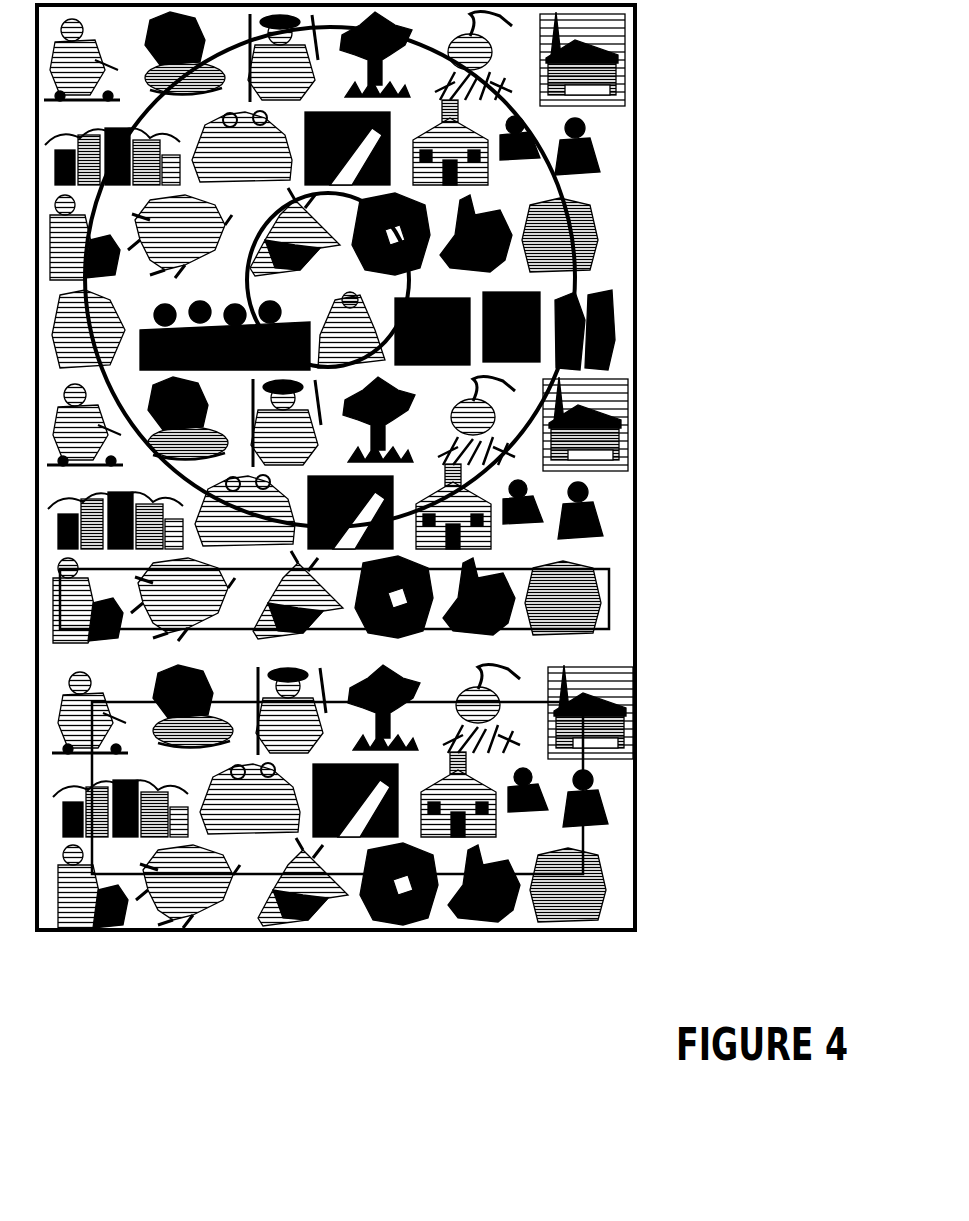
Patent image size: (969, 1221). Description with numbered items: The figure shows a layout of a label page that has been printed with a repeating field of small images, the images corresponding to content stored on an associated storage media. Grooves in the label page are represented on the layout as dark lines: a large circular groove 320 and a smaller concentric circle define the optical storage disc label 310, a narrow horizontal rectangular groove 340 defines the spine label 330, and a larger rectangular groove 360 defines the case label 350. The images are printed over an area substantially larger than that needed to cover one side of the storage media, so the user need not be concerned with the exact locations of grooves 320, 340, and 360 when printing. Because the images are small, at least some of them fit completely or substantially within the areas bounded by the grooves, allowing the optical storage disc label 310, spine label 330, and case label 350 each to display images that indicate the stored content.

The optical storage disc label 310 is at (543, 282).
The groove 320 is at (561, 187).
The spine label 330 is at (583, 565).
The groove 340 is at (610, 593).
The case label 350 is at (520, 757).
The groove 360 is at (583, 757).